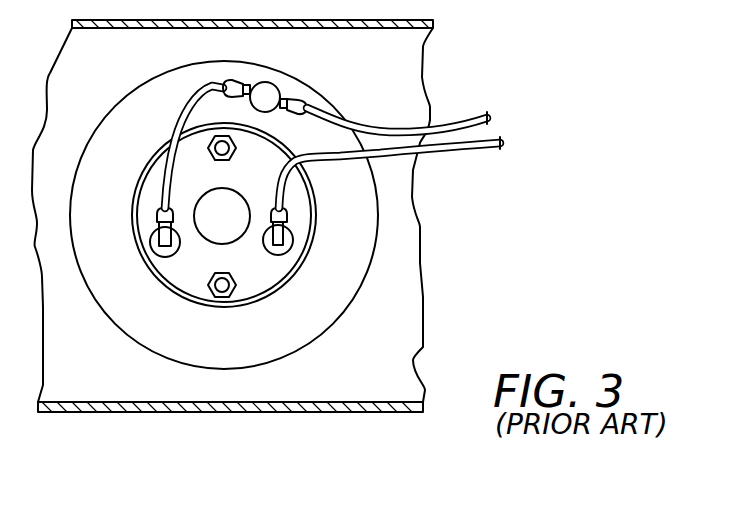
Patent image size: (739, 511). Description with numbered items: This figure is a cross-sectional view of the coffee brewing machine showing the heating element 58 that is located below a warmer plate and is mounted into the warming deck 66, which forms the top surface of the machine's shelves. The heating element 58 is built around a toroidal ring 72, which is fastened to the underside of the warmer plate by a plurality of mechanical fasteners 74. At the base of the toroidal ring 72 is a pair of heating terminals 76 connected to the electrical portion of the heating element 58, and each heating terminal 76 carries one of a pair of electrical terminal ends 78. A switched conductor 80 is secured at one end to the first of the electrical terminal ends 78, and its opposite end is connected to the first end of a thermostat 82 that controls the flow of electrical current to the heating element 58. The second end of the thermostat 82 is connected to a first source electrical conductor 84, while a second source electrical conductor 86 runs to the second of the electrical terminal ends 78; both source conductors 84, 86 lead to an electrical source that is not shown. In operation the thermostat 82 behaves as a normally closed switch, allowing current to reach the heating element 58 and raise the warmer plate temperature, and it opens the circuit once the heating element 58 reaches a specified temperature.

The heating element 58 is at (374, 262).
The warming deck 66 is at (424, 315).
The toroidal ring 72 is at (290, 350).
The mechanical fasteners 74 is at (222, 162).
The heating terminals 76 is at (155, 254).
The electrical terminal ends 78 is at (158, 215).
The switched conductor 80 is at (190, 100).
The thermostat 82 is at (270, 87).
The first source electrical conductor 84 is at (471, 121).
The second source electrical conductor 86 is at (473, 151).